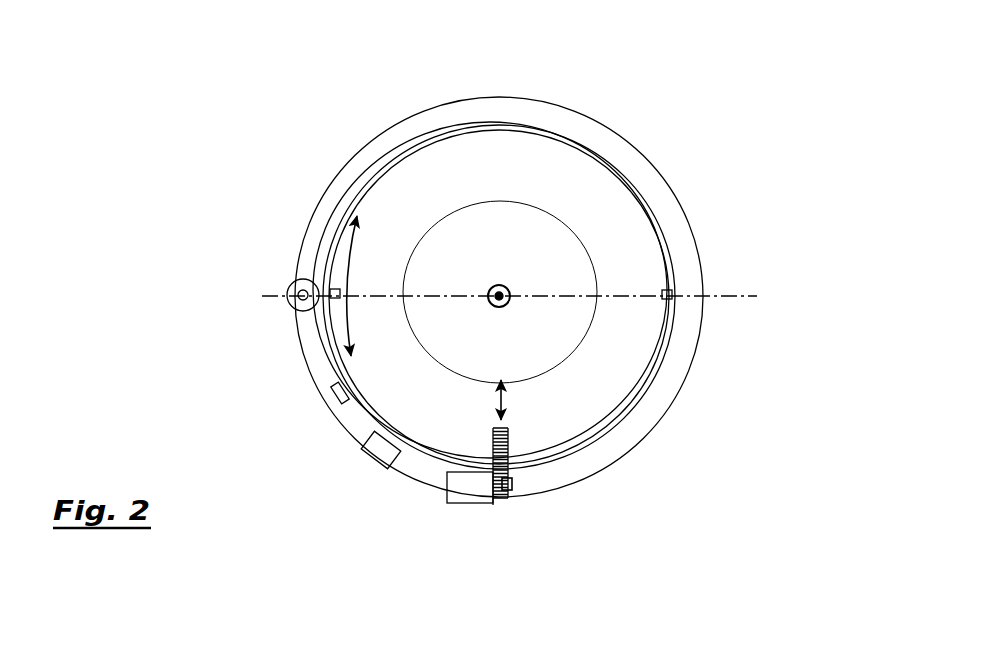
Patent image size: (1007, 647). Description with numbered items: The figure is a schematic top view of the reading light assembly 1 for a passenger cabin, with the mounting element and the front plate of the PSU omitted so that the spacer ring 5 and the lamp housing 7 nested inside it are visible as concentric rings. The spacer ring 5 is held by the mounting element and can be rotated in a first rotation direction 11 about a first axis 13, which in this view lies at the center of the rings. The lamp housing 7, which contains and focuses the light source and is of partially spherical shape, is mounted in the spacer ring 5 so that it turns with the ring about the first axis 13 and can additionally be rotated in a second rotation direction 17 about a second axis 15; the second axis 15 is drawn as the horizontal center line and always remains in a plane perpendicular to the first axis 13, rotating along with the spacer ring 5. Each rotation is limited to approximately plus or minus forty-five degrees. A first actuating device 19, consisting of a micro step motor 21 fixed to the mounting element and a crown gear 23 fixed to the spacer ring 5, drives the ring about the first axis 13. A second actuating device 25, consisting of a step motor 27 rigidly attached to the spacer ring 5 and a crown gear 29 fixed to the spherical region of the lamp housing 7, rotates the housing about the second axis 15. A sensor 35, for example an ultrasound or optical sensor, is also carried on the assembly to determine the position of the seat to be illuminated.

The reading light assembly 1 is at (712, 170).
The spacer ring 5 is at (623, 157).
The lamp housing 7 is at (477, 165).
The first rotation direction 11 is at (347, 200).
The first axis 13 is at (499, 285).
The second axis 15 is at (748, 296).
The second rotation direction 17 is at (503, 398).
The first actuating device 19 is at (272, 313).
The micro step motor 21 is at (288, 283).
The crown gear 23 is at (330, 368).
The second actuating device 25 is at (558, 532).
The step motor 27 is at (473, 497).
The crown gear 29 is at (505, 492).
The sensor 35 is at (380, 455).